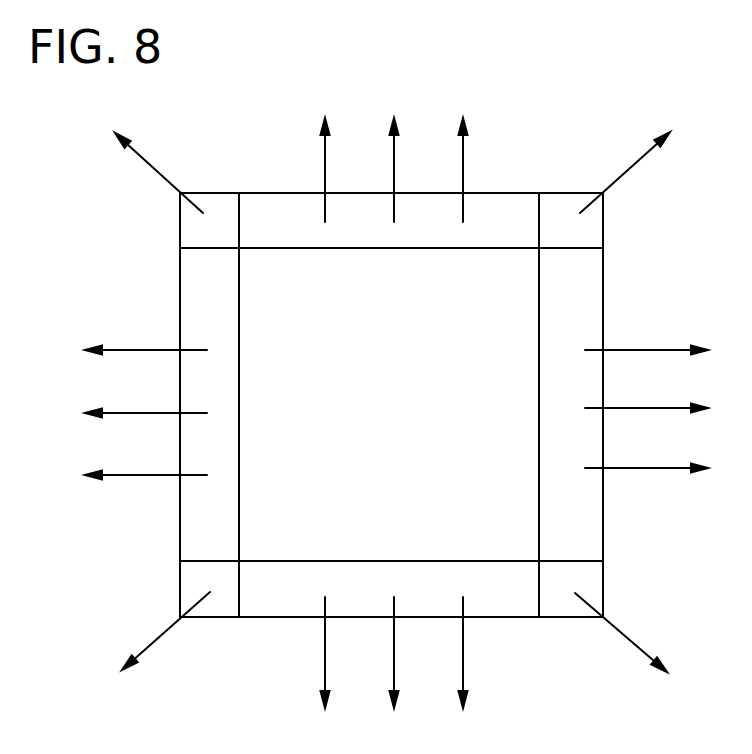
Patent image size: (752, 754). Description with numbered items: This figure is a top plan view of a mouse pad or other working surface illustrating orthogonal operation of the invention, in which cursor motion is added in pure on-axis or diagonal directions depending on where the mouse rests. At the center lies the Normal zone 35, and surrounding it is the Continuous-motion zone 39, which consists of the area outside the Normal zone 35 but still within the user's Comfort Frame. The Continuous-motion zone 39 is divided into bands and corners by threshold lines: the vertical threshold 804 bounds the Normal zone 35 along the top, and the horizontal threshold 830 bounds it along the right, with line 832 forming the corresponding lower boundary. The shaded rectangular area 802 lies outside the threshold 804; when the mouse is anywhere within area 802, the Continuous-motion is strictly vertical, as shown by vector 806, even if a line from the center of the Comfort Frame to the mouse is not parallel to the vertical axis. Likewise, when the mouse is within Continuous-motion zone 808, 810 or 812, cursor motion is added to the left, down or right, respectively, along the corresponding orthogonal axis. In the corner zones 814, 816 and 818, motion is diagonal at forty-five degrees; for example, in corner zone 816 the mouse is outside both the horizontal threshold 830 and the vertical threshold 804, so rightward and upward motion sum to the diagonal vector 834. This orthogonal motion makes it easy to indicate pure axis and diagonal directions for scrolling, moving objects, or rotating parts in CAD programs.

The shaded rectangular area 802 is at (508, 228).
The vertical threshold 804 is at (282, 268).
The vector of Continuous-motion 806 is at (462, 158).
The Continuous-motion zone 808 is at (205, 541).
The Continuous-motion zone 810 is at (505, 597).
The Continuous-motion zone 812 is at (580, 540).
The corner zone 814 is at (222, 217).
The corner zone 816 is at (562, 220).
The corner zone 818 is at (593, 588).
The horizontal threshold 830 is at (540, 405).
The inner bottom boundary line 832 is at (297, 560).
The vector 834 is at (632, 168).
The Continuous-motion zone 39 is at (209, 324).
The Normal zone 35 is at (513, 366).